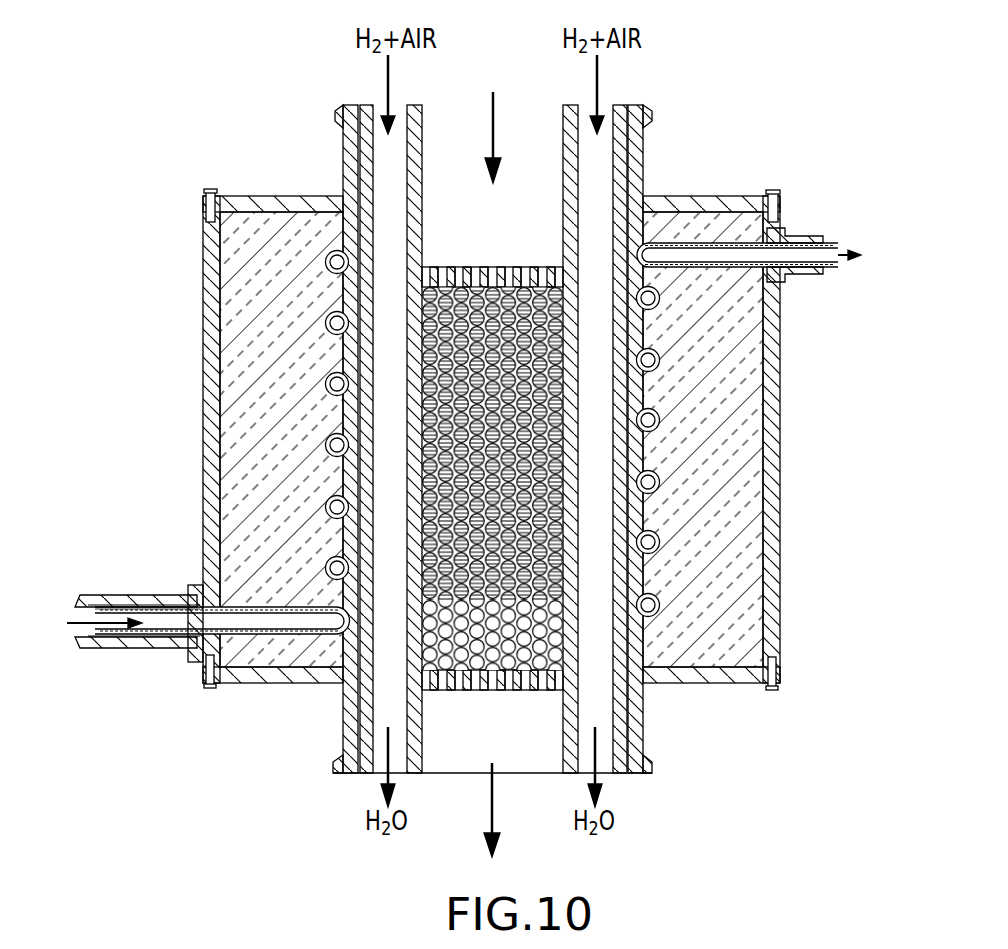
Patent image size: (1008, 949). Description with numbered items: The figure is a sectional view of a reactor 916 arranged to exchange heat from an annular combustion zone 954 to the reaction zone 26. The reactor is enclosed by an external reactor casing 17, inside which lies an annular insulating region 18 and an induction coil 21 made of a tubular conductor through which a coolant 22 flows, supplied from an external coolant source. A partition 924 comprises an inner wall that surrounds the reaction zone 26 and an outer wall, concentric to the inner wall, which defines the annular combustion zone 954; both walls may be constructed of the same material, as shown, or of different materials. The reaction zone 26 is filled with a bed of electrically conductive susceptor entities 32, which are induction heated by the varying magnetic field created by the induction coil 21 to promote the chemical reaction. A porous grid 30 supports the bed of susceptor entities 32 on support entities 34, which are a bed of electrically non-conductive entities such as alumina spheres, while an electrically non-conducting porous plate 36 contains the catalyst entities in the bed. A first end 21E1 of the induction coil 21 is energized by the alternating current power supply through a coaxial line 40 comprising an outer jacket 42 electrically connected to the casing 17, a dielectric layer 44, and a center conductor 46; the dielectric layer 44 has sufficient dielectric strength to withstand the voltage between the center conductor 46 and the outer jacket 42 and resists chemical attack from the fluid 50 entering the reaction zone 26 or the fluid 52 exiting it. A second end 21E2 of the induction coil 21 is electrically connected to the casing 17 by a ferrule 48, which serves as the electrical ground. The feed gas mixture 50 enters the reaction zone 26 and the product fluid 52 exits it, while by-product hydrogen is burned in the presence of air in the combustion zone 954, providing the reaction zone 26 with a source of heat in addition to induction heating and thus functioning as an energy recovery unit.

The reactor 916 is at (227, 122).
The external reactor casing 17 is at (211, 258).
The annular insulating region 18 is at (300, 248).
The induction coil 21 is at (331, 394).
The first end of induction coil 21E1 is at (276, 609).
The second end of induction coil 21E2 is at (721, 246).
The coolant 22 is at (124, 607).
The reaction zone 26 is at (716, 440).
The porous grid 30 is at (481, 691).
The bed of susceptor entities 32 is at (496, 292).
The support entities 34 is at (527, 651).
The porous plate 36 is at (480, 267).
The coaxial line 40 is at (131, 672).
The outer jacket 42 is at (169, 647).
The dielectric layer 44 is at (164, 633).
The center conductor 46 is at (158, 613).
The ferrule 48 is at (800, 236).
The fluid entering reaction zone 50 is at (493, 106).
The fluid exiting reaction zone 52 is at (492, 813).
The partition 924 is at (613, 221).
The annular combustion zone 954 is at (751, 396).